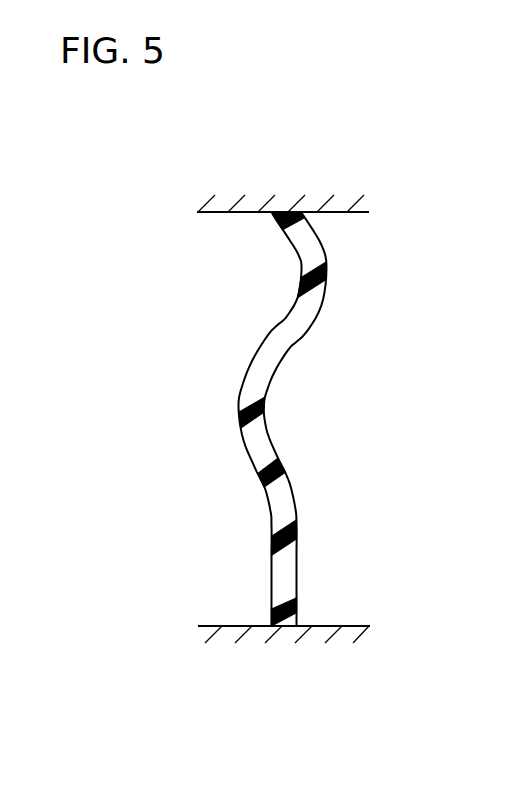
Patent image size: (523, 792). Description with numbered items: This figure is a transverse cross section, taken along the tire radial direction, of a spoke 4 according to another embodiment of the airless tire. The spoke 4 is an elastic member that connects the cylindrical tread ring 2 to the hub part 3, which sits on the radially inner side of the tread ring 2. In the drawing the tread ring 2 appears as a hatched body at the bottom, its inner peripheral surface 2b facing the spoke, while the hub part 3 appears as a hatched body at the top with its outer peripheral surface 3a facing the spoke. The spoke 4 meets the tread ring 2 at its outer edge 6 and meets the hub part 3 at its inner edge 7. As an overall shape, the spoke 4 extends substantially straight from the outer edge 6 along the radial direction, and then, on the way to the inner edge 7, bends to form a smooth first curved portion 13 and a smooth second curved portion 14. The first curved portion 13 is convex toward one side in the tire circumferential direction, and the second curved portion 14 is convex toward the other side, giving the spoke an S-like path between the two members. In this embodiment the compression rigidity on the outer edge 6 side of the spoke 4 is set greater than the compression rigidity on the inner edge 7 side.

The tread ring 2 is at (347, 681).
The inner peripheral surface 2b is at (352, 626).
The hub part 3 is at (346, 177).
The outer peripheral surface 3a is at (353, 213).
The spoke 4 is at (214, 430).
The outer edge 6 is at (287, 628).
The inner edge 7 is at (289, 211).
The first curved portion 13 is at (269, 402).
The second curved portion 14 is at (297, 268).